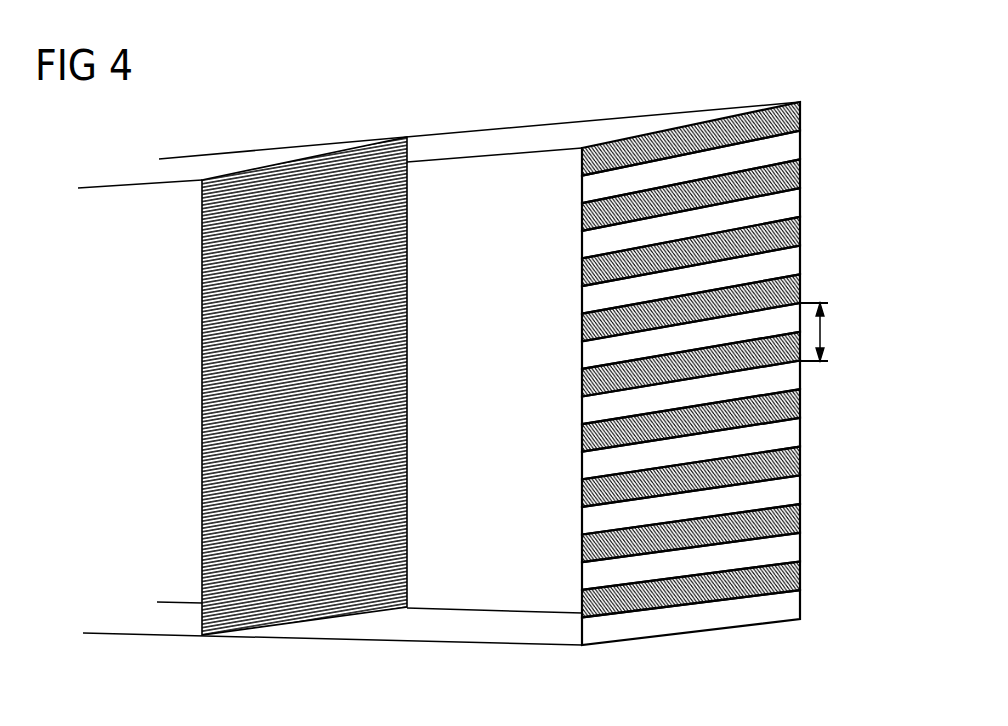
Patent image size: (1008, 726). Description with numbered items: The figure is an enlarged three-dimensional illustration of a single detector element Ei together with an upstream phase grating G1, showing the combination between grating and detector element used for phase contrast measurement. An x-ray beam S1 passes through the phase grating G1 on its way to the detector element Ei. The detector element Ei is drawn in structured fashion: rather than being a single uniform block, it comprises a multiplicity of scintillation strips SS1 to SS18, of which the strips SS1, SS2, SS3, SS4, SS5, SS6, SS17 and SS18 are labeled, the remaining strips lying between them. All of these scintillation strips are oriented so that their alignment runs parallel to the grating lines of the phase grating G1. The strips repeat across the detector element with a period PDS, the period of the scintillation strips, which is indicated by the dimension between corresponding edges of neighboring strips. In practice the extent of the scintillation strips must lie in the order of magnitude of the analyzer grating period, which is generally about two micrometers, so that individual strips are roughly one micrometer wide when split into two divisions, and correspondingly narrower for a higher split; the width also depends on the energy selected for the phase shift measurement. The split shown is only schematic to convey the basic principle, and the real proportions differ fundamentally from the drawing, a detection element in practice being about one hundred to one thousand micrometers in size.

The phase grating G1 is at (305, 158).
The x-ray beam S1 is at (511, 137).
The scintillation strip SS1 is at (790, 118).
The scintillation strip SS2 is at (580, 185).
The scintillation strip SS3 is at (790, 173).
The scintillation strip SS4 is at (580, 240).
The scintillation strip SS5 is at (790, 230).
The scintillation strip SS6 is at (580, 298).
The scintillation strip SS17 is at (800, 580).
The scintillation strip SS18 is at (582, 631).
The period of the scintillation strips PDS is at (822, 325).
The ith detector element Ei is at (714, 90).